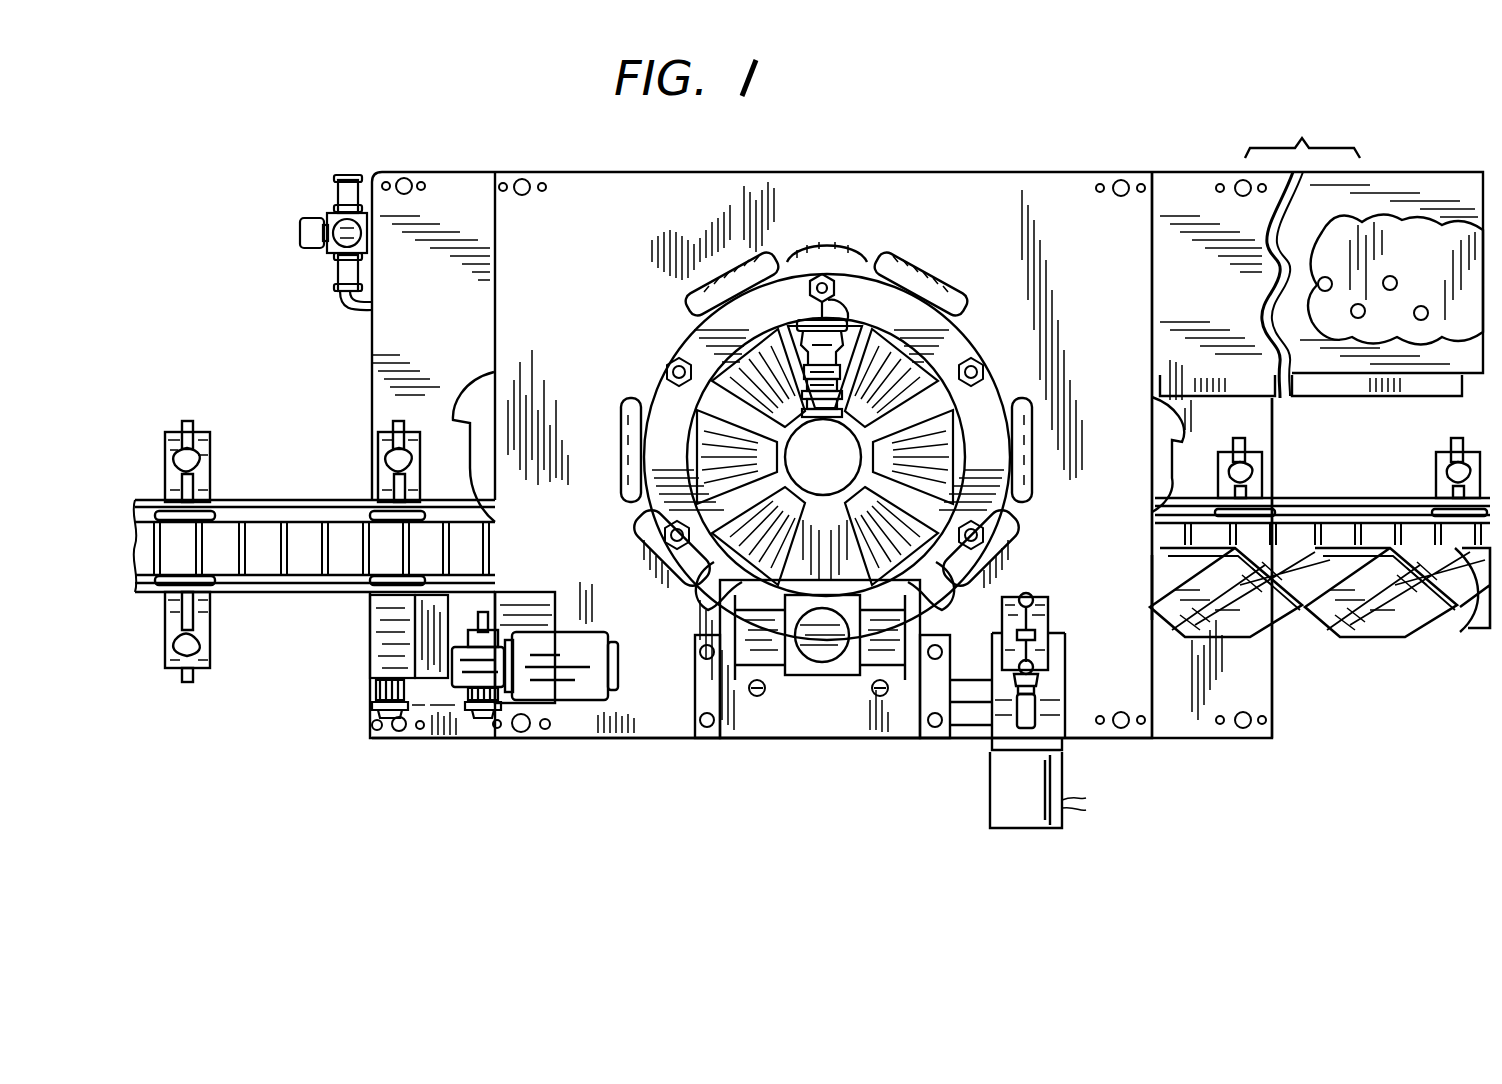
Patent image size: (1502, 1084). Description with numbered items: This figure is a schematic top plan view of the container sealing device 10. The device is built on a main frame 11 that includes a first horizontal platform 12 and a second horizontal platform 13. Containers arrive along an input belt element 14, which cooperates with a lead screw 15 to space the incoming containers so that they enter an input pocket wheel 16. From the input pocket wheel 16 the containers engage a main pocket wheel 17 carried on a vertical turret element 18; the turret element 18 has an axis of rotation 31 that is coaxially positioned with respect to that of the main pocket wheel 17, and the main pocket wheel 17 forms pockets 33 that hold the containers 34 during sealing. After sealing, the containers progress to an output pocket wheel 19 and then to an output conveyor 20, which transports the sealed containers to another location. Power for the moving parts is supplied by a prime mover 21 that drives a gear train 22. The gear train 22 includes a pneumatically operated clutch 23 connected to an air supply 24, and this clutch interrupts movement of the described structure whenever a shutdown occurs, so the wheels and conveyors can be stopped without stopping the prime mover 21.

The device 10 is at (1126, 745).
The main frame 11 is at (550, 742).
The first horizontal platform 12 is at (1137, 686).
The second horizontal platform 13 is at (1262, 690).
The input belt element 14 is at (1448, 632).
The lead screw 15 is at (1366, 642).
The input pocket wheel 16 is at (1180, 424).
The main pocket wheel 17 is at (985, 345).
The turret element 18 is at (845, 405).
The output pocket wheel 19 is at (484, 392).
The output conveyor 20 is at (292, 542).
The prime mover 21 is at (600, 632).
The gear train 22 is at (460, 710).
The pneumatically operated clutch 23 is at (464, 646).
The air supply 24 is at (337, 282).
The axis of rotation 31 is at (830, 452).
The pockets 33 is at (939, 478).
The containers 34 is at (1014, 545).